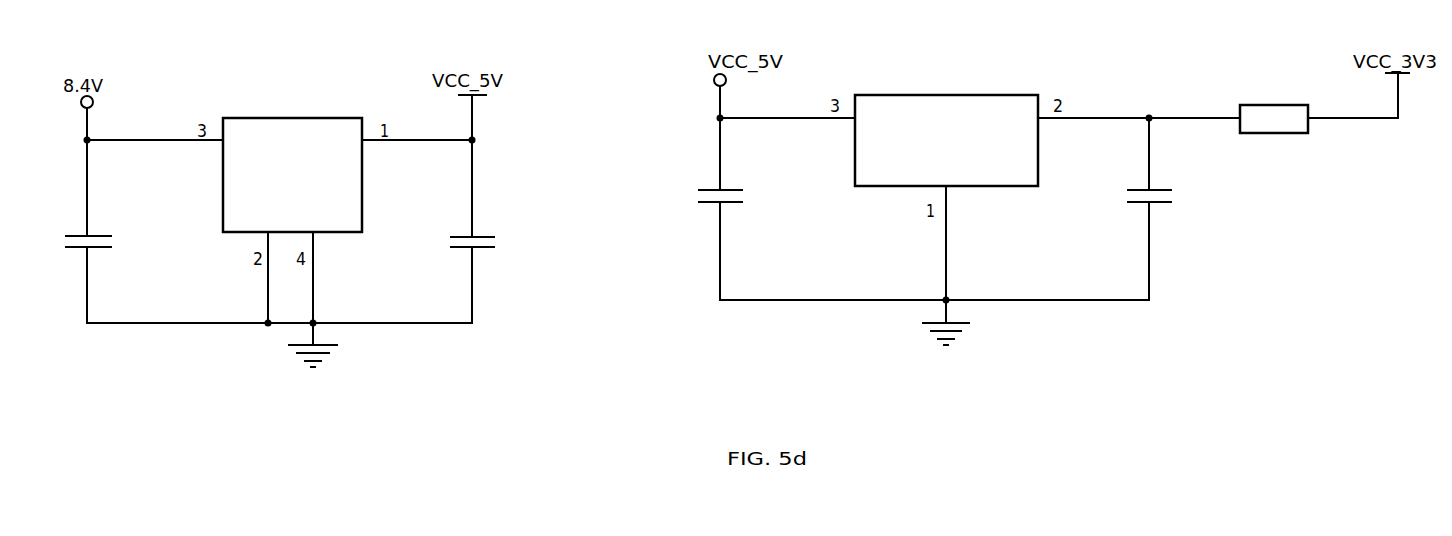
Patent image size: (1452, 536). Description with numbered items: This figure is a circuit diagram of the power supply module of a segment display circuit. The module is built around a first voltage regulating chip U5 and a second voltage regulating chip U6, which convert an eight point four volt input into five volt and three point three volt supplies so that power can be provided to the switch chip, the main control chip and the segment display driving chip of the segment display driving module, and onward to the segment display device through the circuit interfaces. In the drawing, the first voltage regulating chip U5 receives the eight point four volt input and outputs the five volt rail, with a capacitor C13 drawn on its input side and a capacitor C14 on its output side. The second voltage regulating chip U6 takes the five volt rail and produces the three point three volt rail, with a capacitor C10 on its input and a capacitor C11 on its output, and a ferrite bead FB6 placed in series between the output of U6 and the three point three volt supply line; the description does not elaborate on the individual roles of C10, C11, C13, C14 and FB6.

The first voltage regulating chip U5 is at (305, 142).
The input capacitor C13 is at (105, 218).
The output capacitor C14 is at (489, 218).
The second voltage regulating chip U6 is at (946, 108).
The input capacitor C10 is at (738, 172).
The output capacitor C11 is at (1166, 173).
The ferrite bead FB6 is at (1263, 103).